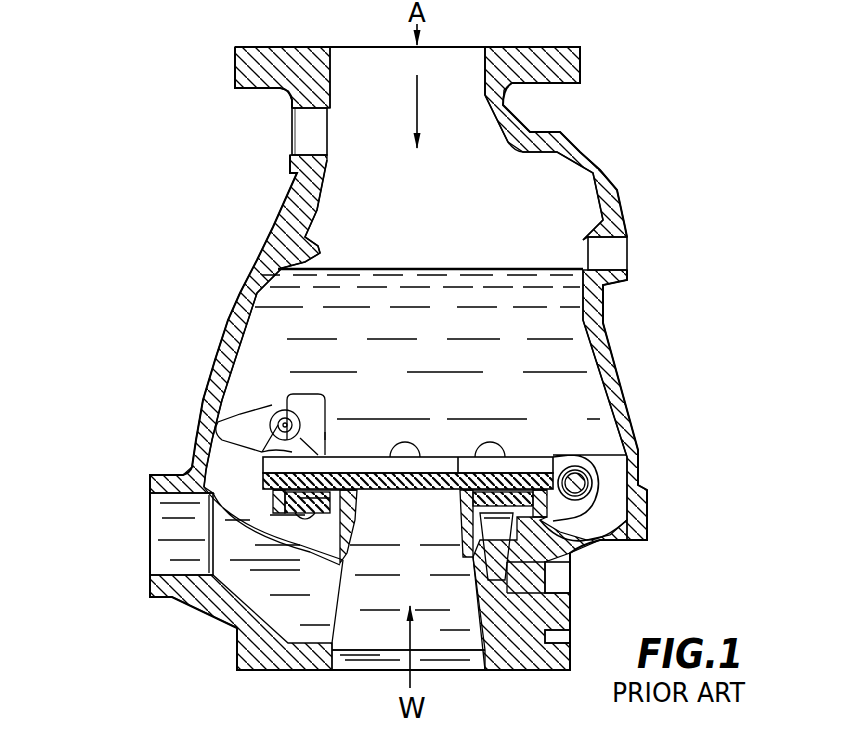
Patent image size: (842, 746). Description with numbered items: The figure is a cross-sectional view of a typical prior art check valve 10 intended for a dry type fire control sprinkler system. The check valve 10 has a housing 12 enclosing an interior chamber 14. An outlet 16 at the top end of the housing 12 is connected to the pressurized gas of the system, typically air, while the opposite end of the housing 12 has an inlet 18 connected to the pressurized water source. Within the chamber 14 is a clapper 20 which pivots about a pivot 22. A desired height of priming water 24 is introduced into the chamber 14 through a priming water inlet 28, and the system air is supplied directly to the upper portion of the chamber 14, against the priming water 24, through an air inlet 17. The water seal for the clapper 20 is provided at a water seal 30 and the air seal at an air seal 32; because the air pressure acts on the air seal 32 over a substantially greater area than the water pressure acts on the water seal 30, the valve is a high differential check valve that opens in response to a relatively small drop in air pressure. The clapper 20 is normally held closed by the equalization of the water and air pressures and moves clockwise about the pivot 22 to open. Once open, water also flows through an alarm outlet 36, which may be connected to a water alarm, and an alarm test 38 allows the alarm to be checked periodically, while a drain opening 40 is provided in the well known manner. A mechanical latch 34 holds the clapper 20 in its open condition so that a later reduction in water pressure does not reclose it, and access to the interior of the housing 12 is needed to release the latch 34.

The check valve 10 is at (636, 248).
The housing 12 is at (612, 160).
The interior chamber 14 is at (430, 221).
The outlet 16 is at (488, 62).
The air inlet 17 is at (288, 130).
The inlet 18 is at (411, 687).
The clapper 20 is at (368, 455).
The pivot 22 is at (600, 480).
The priming water 24 is at (360, 266).
The priming water inlet 28 is at (612, 265).
The water seal 30 is at (458, 468).
The air seal 32 is at (557, 470).
The mechanical latch 34 is at (270, 402).
The alarm outlet 36 is at (570, 578).
The alarm test 38 is at (572, 638).
The drain opening 40 is at (146, 553).